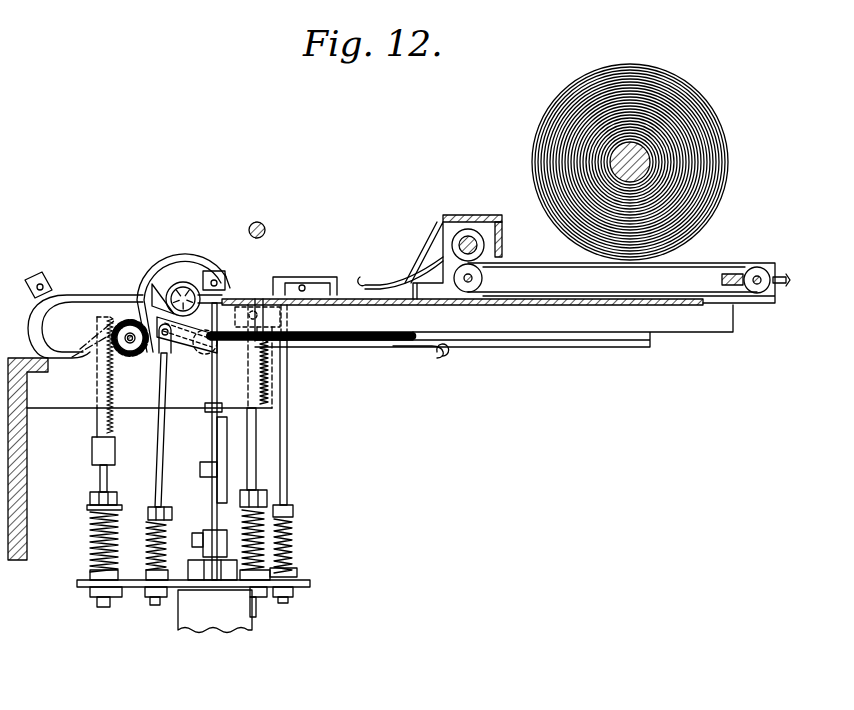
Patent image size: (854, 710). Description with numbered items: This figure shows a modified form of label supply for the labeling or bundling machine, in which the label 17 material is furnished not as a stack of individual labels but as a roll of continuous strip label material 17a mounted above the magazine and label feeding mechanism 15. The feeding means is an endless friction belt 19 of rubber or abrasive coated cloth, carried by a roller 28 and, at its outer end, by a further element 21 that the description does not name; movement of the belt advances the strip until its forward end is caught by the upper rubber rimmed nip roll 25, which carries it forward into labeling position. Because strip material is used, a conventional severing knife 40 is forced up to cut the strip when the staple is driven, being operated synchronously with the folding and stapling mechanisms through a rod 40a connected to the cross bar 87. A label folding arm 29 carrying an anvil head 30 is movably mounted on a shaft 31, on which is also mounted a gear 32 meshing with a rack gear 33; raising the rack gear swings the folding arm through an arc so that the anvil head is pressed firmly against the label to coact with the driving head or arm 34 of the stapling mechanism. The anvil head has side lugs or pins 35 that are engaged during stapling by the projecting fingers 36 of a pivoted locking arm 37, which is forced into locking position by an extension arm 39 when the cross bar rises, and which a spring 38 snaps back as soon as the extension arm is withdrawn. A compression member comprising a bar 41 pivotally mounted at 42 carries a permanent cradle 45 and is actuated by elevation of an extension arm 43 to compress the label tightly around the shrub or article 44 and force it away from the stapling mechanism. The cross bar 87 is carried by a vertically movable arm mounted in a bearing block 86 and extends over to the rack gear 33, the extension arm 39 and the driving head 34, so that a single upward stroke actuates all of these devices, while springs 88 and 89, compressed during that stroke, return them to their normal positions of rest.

The magazine and label feeding mechanism 15 is at (467, 214).
The label 17 is at (177, 287).
The roll of strip label material 17a is at (728, 172).
The endless friction belt 19 is at (700, 263).
The guide roller 21 is at (757, 267).
The upper nip roll 25 is at (470, 240).
The roller 28 is at (475, 274).
The label folding arm 29 is at (158, 252).
The anvil head 30 is at (47, 277).
The shaft 31 is at (131, 346).
The gear 32 is at (121, 320).
The rack gear 33 is at (95, 426).
The driving head 34 is at (212, 417).
The side lugs or pins 35 is at (35, 278).
The projecting fingers 36 is at (218, 271).
The locking arm 37 is at (247, 253).
The spring 38 is at (272, 393).
The extension arm 39 is at (252, 430).
The severing knife 40 is at (309, 277).
The rod 40a is at (290, 450).
The bar 41 is at (173, 345).
The pivot 42 is at (204, 352).
The extension arm 43 is at (158, 468).
The shrub or article 44 is at (186, 292).
The permanent cradle 45 is at (163, 293).
The bearing block 86 is at (178, 619).
The cross bar 87 is at (310, 578).
The spring 88 is at (265, 515).
The spring 89 is at (90, 522).